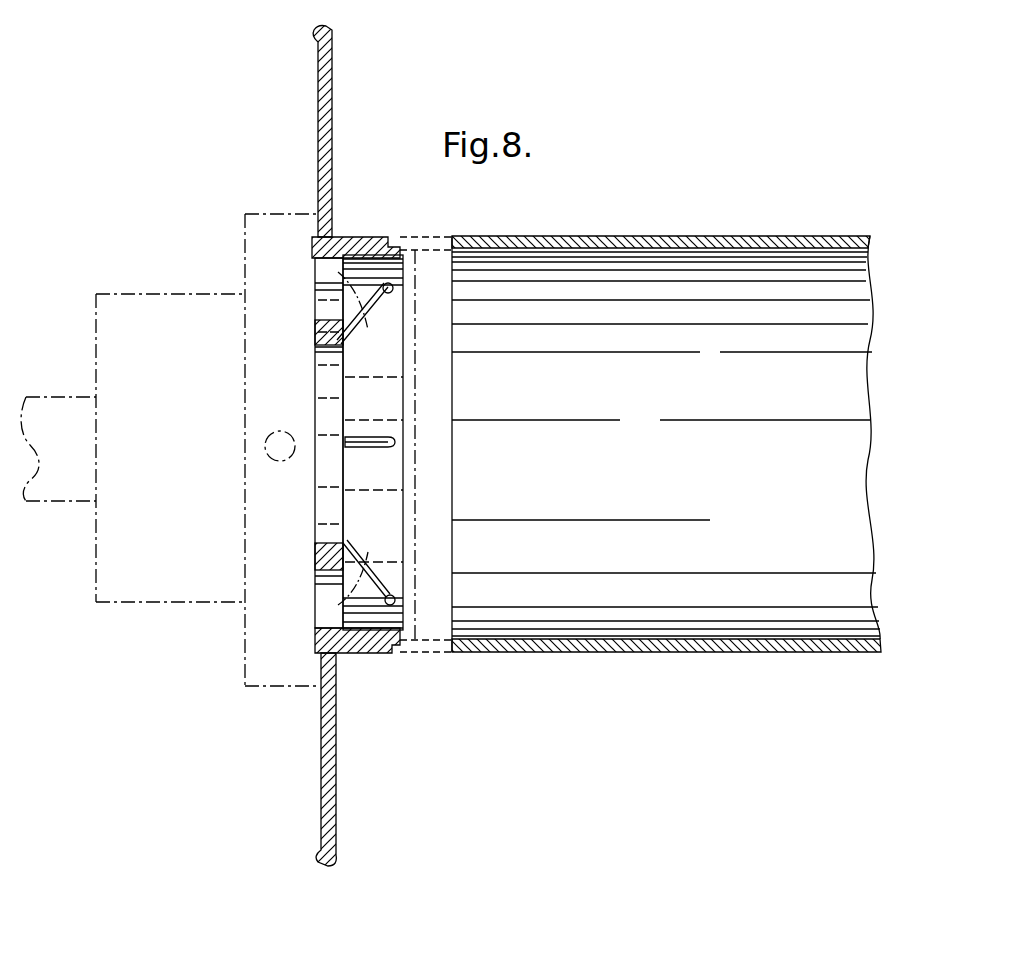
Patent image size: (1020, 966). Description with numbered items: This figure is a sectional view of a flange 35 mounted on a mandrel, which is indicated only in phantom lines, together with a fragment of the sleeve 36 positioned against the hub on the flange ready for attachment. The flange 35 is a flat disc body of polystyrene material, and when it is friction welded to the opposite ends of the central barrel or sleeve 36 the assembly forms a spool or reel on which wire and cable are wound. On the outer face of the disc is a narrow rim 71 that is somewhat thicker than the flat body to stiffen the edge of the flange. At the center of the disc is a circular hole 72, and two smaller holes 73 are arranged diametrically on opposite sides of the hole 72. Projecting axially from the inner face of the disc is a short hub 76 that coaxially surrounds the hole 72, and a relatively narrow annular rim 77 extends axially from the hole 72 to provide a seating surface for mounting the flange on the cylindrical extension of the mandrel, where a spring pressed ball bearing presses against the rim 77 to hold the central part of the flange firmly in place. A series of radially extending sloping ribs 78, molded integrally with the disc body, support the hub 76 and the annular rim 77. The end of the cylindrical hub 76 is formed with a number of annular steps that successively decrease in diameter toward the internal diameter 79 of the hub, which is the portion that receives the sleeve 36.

The flange 35 is at (336, 845).
The sleeve 36 is at (565, 653).
The rim 71 is at (318, 33).
The circular hole 72 is at (332, 532).
The smaller holes 73 is at (322, 292).
The hub 76 is at (346, 237).
The annular rim 77 is at (330, 352).
The sloping ribs 78 is at (370, 297).
The internal diameter 79 is at (363, 655).